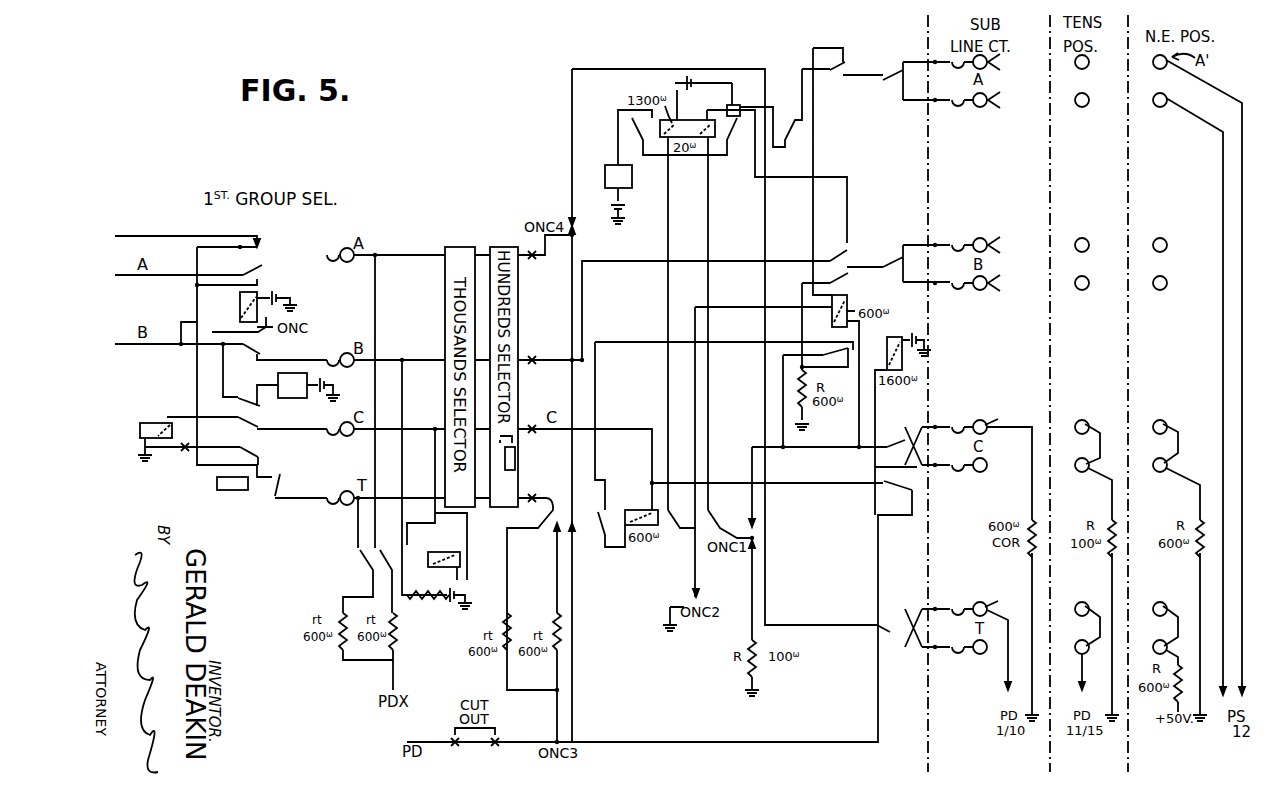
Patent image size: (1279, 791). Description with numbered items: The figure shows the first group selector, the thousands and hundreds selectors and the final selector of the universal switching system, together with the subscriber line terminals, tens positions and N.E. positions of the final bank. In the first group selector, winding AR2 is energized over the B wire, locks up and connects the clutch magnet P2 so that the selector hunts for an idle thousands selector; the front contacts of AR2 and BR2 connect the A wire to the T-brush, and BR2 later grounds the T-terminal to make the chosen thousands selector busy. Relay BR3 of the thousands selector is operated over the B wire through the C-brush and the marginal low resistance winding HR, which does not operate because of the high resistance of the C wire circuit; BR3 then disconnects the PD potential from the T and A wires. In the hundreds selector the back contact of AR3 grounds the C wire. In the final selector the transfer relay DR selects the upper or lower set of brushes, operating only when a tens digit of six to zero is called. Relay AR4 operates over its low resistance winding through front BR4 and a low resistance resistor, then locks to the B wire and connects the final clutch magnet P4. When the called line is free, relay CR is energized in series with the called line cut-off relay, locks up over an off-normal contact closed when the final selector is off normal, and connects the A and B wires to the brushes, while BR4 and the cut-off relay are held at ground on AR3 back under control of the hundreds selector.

The first group selector relay AR2 is at (251, 311).
The clutch magnet P2 is at (309, 387).
The marginal low resistance relay HR is at (198, 435).
The first group selector busying relay BR2 is at (232, 493).
The hundreds selector relay AR3 is at (506, 469).
The thousands selector relay BR3 is at (463, 559).
The final clutch magnet P4 is at (628, 167).
The final selector relay AR4 is at (739, 159).
The final selector cut-through relay CR is at (777, 360).
The brush-set transfer relay DR is at (763, 424).
The final selector busying relay BR4 is at (639, 507).